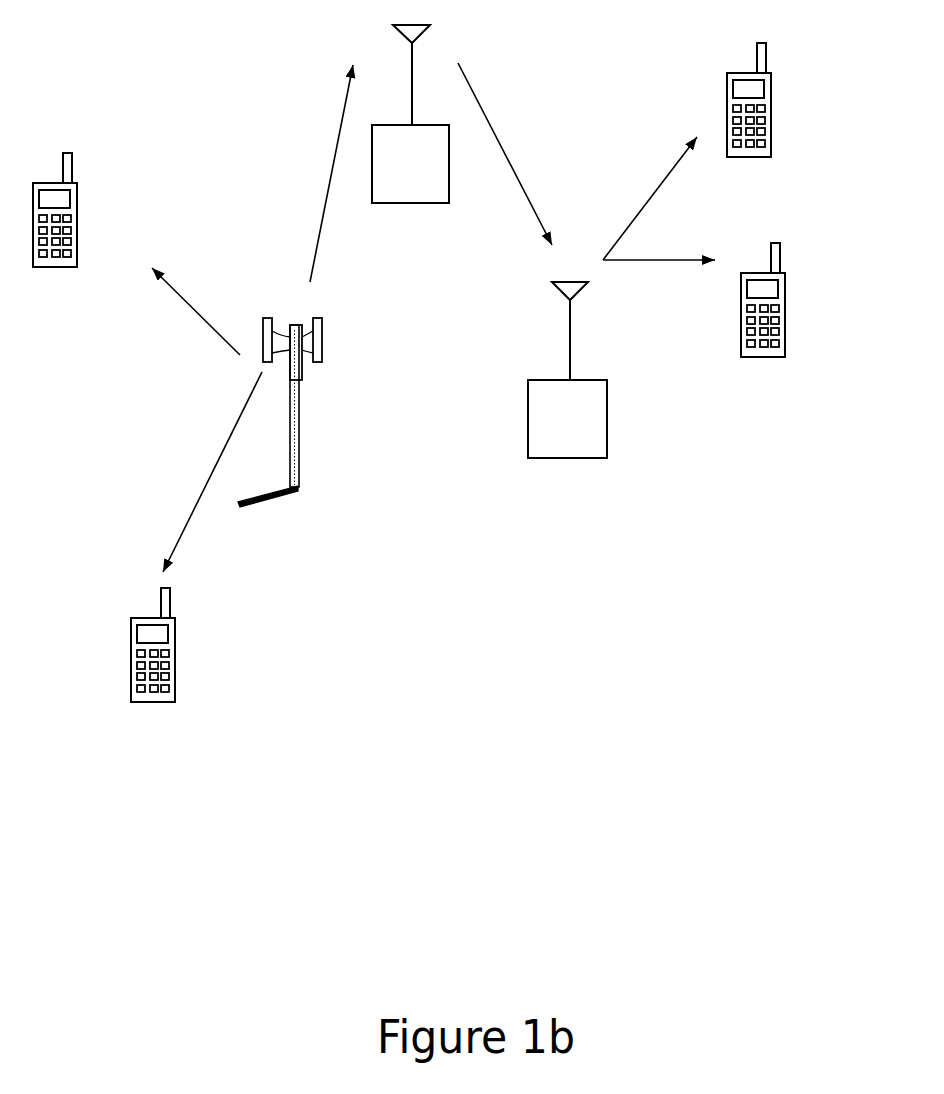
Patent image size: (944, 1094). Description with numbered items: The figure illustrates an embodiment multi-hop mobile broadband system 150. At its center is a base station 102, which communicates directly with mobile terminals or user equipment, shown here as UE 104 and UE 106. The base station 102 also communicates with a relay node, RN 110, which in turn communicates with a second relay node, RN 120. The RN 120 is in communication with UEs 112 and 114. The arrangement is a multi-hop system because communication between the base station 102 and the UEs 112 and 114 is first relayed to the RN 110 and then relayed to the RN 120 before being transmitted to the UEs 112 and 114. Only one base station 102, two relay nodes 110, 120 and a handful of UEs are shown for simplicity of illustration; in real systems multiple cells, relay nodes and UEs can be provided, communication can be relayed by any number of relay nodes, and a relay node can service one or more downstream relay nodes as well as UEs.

The multi-hop mobile broadband system 150 is at (248, 92).
The base station 102 is at (298, 473).
The user equipment 104 is at (131, 677).
The user equipment 106 is at (78, 248).
The relay node 110 is at (400, 203).
The user equipment 112 is at (772, 138).
The user equipment 114 is at (785, 338).
The second relay node 120 is at (607, 432).